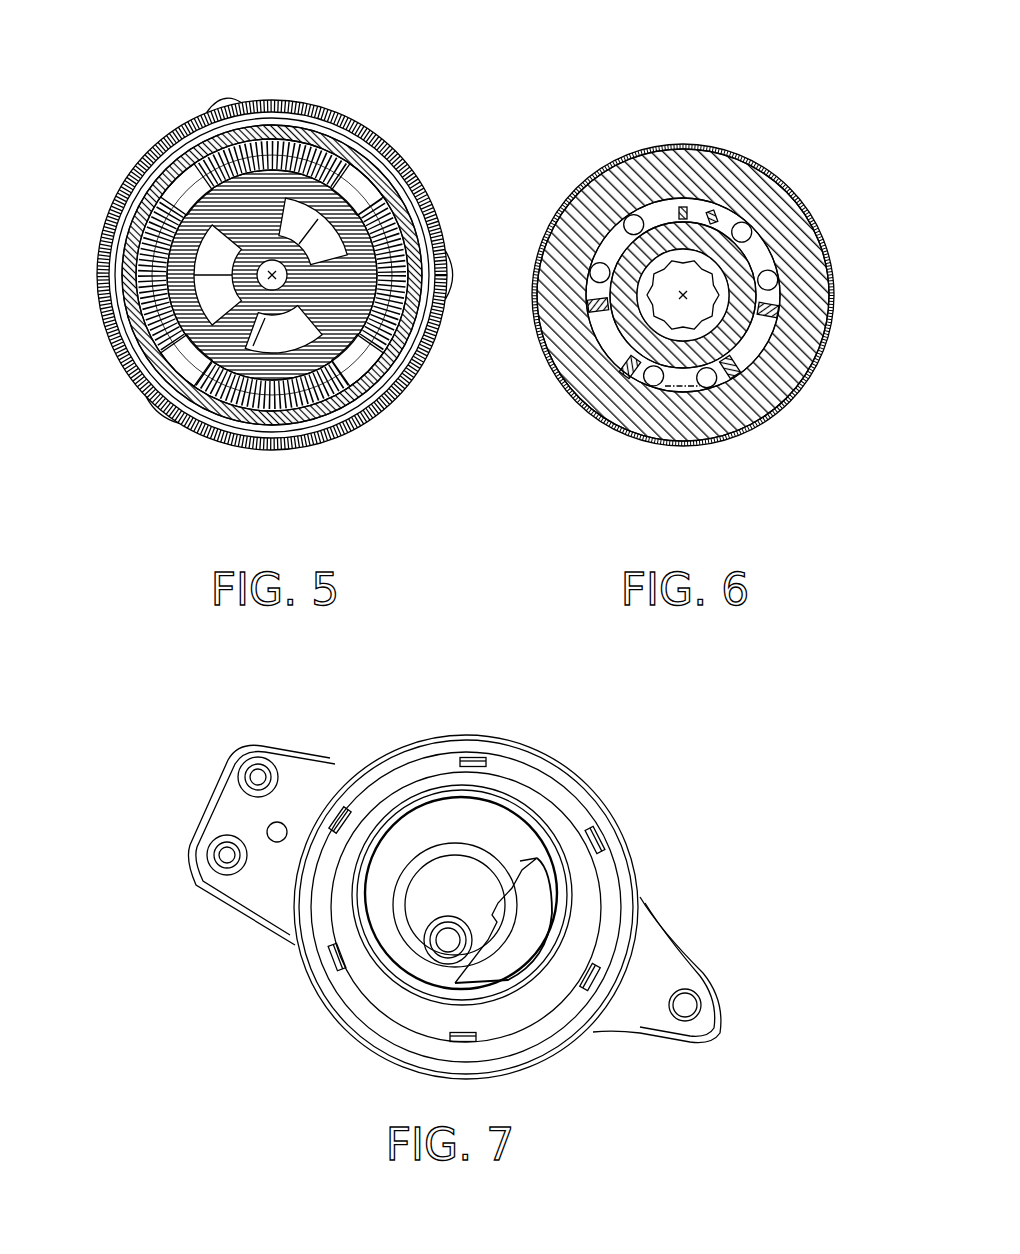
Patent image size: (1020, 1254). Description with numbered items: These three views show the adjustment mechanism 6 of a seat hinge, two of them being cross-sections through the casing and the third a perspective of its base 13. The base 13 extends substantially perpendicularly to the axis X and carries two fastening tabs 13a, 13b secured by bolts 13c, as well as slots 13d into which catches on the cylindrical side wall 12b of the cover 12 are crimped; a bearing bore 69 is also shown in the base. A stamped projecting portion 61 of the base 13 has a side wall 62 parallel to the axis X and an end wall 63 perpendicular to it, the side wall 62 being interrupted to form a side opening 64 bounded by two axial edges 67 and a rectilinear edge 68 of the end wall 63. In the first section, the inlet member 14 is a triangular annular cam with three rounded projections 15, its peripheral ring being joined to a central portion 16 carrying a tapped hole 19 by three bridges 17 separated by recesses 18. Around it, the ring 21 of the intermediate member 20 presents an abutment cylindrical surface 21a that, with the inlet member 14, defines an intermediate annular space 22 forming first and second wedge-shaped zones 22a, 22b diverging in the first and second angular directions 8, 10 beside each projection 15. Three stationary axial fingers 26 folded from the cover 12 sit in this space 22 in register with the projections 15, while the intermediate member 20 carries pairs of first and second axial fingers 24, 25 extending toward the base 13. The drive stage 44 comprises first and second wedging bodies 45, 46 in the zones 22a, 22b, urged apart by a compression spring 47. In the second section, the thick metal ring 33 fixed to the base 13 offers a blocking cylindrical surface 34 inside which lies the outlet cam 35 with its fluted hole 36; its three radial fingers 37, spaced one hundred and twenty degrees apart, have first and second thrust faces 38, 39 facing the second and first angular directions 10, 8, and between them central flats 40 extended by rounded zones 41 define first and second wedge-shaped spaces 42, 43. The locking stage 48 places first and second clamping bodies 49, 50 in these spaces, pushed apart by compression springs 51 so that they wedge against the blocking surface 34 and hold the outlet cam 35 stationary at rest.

In FIG. 6, the adjustment mechanism 6 is at (783, 158).
In FIG. 5, the first angular direction 8 is at (200, 47).
In FIG. 6, the first angular direction 8 is at (785, 87).
In FIG. 5, the second angular direction 10 is at (92, 118).
In FIG. 6, the second angular direction 10 is at (678, 64).
In FIG. 5, the cover 12 is at (323, 447).
In FIG. 5, the cylindrical side wall 12b is at (143, 248).
In FIG. 7, the base 13 is at (627, 820).
In FIG. 5, the fastening tab 13a is at (140, 217).
In FIG. 7, the fastening tab 13a is at (673, 967).
In FIG. 7, the fastening tab 13b is at (250, 893).
In FIG. 5, the bolts 13c is at (272, 453).
In FIG. 7, the slots 13d is at (335, 835).
In FIG. 5, the inlet member 14 is at (355, 190).
In FIG. 5, the projections 15 is at (327, 143).
In FIG. 5, the central portion 16 is at (320, 395).
In FIG. 5, the bridges 17 is at (398, 248).
In FIG. 5, the recesses 18 is at (340, 370).
In FIG. 5, the tapped hole 19 is at (330, 262).
In FIG. 5, the intermediate member 20 is at (245, 432).
In FIG. 5, the ring 21 is at (298, 133).
In FIG. 5, the abutment cylindrical surface 21a is at (150, 262).
In FIG. 5, the intermediate annular space 22 is at (140, 285).
In FIG. 5, the first wedge-shaped zone 22a is at (190, 170).
In FIG. 5, the second wedge-shaped zone 22b is at (266, 140).
In FIG. 6, the first axial finger 24 is at (743, 213).
In FIG. 6, the second axial finger 25 is at (625, 178).
In FIG. 5, the stationary axial fingers 26 is at (228, 157).
In FIG. 6, the thick metal ring 33 is at (812, 295).
In FIG. 6, the blocking cylindrical surface 34 is at (682, 393).
In FIG. 6, the outlet cam 35 is at (632, 368).
In FIG. 6, the fluted hole 36 is at (694, 392).
In FIG. 6, the radial fingers 37 is at (692, 210).
In FIG. 6, the first thrust face 38 is at (685, 210).
In FIG. 6, the second thrust face 39 is at (700, 210).
In FIG. 6, the central flat 40 is at (585, 247).
In FIG. 6, the rounded zones 41 is at (670, 208).
In FIG. 6, the first wedge-shaped space 42 is at (788, 317).
In FIG. 6, the second wedge-shaped space 43 is at (747, 215).
In FIG. 5, the drive stage 44 is at (378, 133).
In FIG. 5, the first wedging body 45 is at (262, 140).
In FIG. 5, the second wedging body 46 is at (205, 173).
In FIG. 5, the compression spring 47 is at (387, 213).
In FIG. 6, the locking stage 48 is at (758, 440).
In FIG. 6, the first clamping body 49 is at (753, 225).
In FIG. 6, the second clamping body 50 is at (777, 285).
In FIG. 6, the compression springs 51 is at (590, 213).
In FIG. 7, the projecting portion 61 is at (502, 870).
In FIG. 7, the side wall 62 is at (415, 868).
In FIG. 7, the end wall 63 is at (410, 917).
In FIG. 7, the side opening 64 is at (522, 892).
In FIG. 7, the axial edges 67 is at (543, 862).
In FIG. 7, the rectilinear edge 68 is at (482, 947).
In FIG. 7, the bearing bore 69 is at (438, 945).
In FIG. 5, the axis X is at (273, 277).
In FIG. 6, the axis X is at (684, 297).